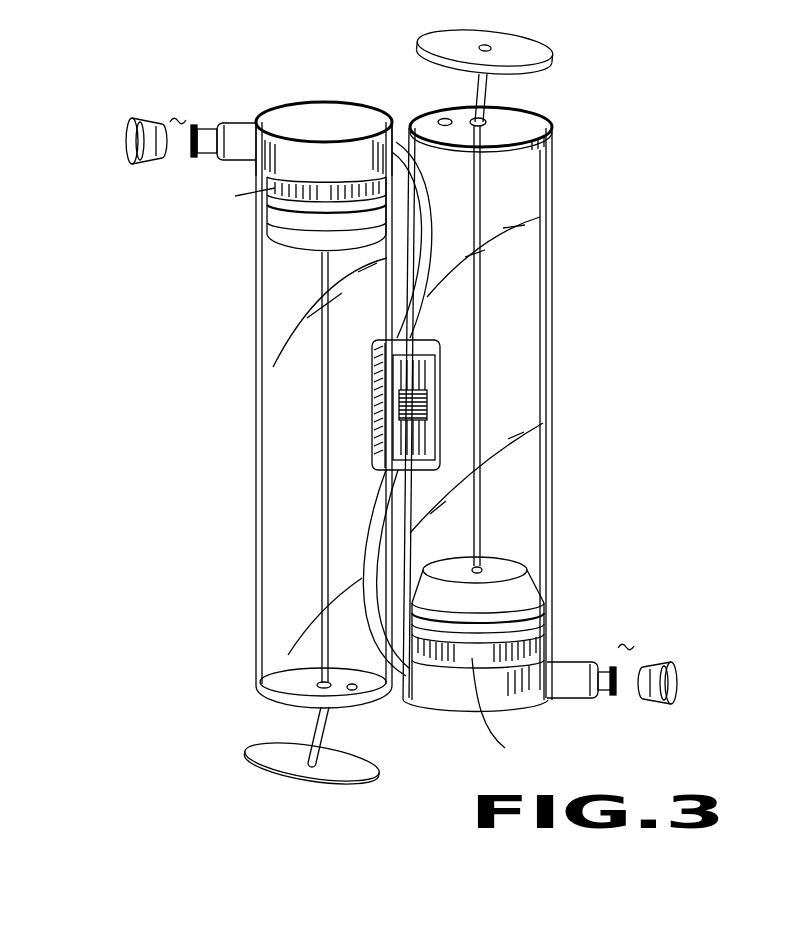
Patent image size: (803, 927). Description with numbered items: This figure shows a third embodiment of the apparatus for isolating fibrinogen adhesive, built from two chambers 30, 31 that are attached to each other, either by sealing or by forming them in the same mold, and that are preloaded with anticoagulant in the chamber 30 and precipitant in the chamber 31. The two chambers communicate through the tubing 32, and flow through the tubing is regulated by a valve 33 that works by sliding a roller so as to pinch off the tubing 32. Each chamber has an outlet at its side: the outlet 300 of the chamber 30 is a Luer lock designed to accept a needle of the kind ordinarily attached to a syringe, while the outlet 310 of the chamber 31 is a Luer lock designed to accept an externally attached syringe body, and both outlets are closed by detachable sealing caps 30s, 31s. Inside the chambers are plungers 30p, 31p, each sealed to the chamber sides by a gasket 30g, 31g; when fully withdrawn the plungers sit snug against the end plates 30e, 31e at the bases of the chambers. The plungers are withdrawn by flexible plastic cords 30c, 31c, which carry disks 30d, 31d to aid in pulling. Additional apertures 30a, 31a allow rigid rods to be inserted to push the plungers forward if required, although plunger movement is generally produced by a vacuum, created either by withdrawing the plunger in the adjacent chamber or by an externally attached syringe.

The chamber 30 is at (250, 452).
The aperture 30a is at (356, 691).
The flexible plastic cord 30c is at (320, 383).
The disk 30d is at (275, 772).
The end plate 30e is at (278, 682).
The gasket 30g is at (333, 233).
The plunger 30p is at (265, 222).
The outlet 300 is at (196, 128).
The sealing cap 30s is at (127, 136).
The chamber 31 is at (558, 323).
The aperture 31a is at (446, 117).
The flexible plastic cord 31c is at (480, 290).
The disk 31d is at (558, 64).
The end plate 31e is at (549, 118).
The gasket 31g is at (468, 643).
The plunger 31p is at (549, 598).
The outlet 310 is at (613, 692).
The sealing cap 31s is at (662, 670).
The tubing 32 is at (437, 213).
The valve 33 is at (420, 400).